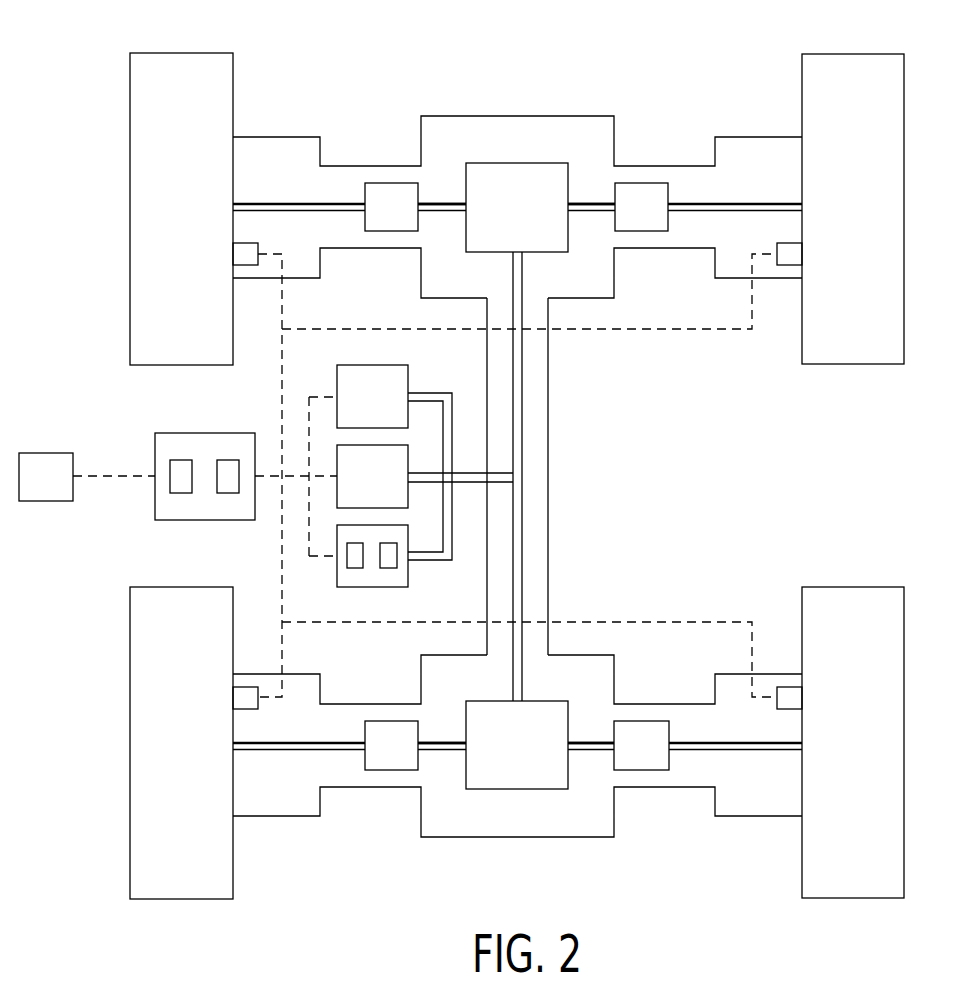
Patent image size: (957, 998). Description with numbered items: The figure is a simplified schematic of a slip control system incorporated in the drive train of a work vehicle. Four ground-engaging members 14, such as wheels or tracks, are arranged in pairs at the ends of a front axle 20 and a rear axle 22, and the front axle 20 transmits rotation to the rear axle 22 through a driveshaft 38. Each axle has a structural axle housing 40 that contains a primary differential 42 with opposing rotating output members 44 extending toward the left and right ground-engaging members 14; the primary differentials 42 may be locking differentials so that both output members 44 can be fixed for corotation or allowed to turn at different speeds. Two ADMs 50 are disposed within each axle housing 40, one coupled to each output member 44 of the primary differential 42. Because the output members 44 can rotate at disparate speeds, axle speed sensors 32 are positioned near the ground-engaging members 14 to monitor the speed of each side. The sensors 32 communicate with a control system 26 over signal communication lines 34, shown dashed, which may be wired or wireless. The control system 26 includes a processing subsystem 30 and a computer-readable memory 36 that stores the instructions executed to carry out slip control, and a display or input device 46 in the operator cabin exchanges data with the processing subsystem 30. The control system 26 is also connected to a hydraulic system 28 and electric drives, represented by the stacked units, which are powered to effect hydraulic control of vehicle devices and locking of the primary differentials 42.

The ground-engaging members 14 is at (181, 53).
The front axle 20 is at (657, 165).
The rear axle 22 is at (655, 701).
The control system 26 is at (205, 433).
The hydraulic system 28 is at (370, 587).
The processing subsystem 30 is at (181, 493).
The sensors 32 is at (247, 243).
The signal communication lines 34 is at (305, 329).
The computer-readable memory 36 is at (228, 493).
The driveshaft 38 is at (548, 474).
The axle housings 40 is at (667, 252).
The primary differentials 42 is at (503, 220).
The output members 44 is at (442, 213).
The display or input device 46 is at (46, 453).
The ADMs 50 is at (379, 218).